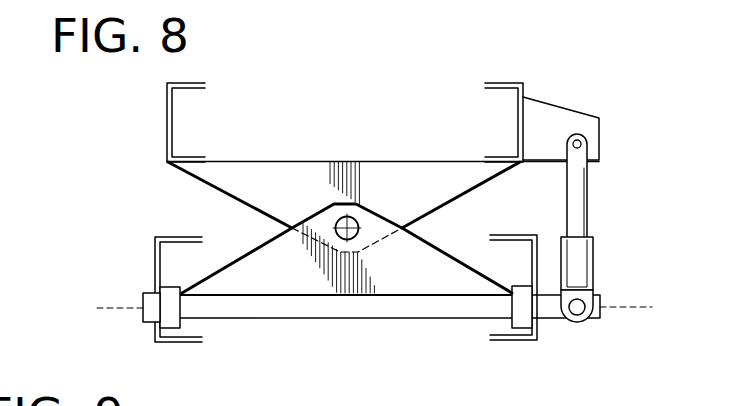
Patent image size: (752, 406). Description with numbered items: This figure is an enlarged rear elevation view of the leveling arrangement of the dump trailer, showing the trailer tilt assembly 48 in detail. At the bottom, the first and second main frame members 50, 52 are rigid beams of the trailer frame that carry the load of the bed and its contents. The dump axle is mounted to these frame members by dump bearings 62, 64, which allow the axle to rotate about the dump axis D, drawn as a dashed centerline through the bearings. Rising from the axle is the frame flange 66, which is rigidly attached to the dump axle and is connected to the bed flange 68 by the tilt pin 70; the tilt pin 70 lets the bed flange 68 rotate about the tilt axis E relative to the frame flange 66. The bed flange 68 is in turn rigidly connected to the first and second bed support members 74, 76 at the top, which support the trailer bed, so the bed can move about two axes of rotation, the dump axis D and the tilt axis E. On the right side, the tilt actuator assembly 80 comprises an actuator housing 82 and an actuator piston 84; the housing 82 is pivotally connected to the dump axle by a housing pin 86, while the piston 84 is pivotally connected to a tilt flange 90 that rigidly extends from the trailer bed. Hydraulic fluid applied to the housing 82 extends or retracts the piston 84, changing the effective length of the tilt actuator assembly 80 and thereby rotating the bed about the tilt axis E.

The trailer tilt assembly 48 is at (130, 226).
The first main frame member 50 is at (155, 270).
The second main frame member 52 is at (520, 342).
The dump bearing 62 is at (176, 307).
The dump bearing 64 is at (518, 308).
The frame flange 66 is at (248, 263).
The bed flange 68 is at (232, 193).
The tilt pin 70 is at (335, 213).
The first bed support member 74 is at (167, 128).
The second bed support member 76 is at (508, 82).
The tilt actuator assembly 80 is at (630, 268).
The actuator housing 82 is at (587, 262).
The actuator piston 84 is at (580, 180).
The housing pin 86 is at (583, 322).
The tilt flange 90 is at (538, 117).
The tilt axis E is at (362, 209).
The dump axis D is at (636, 308).